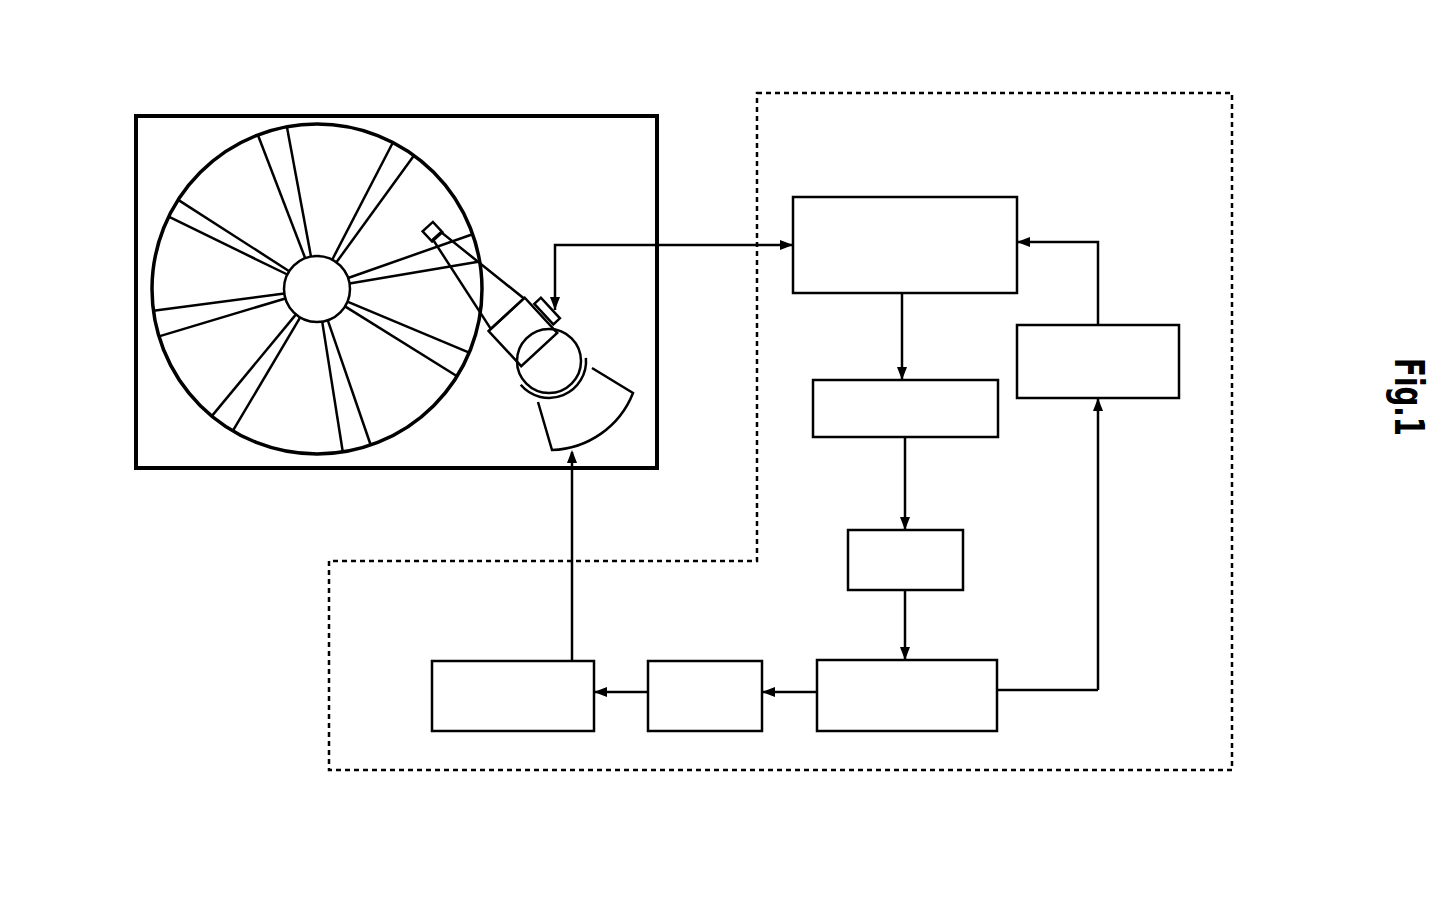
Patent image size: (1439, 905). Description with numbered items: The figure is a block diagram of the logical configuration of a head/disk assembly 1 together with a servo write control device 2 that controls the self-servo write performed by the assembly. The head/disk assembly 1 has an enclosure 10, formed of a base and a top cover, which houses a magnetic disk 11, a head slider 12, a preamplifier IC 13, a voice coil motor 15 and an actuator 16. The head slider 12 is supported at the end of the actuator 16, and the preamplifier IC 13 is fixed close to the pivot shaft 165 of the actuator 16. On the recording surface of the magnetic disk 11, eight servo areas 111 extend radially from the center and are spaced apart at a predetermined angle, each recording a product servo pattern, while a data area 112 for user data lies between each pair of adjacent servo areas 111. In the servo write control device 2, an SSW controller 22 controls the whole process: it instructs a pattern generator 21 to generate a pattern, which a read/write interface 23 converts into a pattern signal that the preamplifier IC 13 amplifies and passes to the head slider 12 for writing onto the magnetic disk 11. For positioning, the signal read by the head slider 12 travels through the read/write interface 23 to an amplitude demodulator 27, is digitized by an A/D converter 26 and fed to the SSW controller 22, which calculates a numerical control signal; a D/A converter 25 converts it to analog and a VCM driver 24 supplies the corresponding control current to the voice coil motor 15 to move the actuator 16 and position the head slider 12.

The head/disk assembly 1 is at (386, 282).
The servo write control device 2 is at (1234, 494).
The enclosure 10 is at (136, 295).
The magnetic disk 11 is at (268, 293).
The servo areas 111 is at (175, 219).
The data area 112 is at (303, 428).
The head slider 12 is at (441, 221).
The preamplifier IC 13 is at (560, 317).
The voice coil motor 15 is at (607, 380).
The actuator 16 is at (482, 376).
The pivot shaft 165 is at (521, 387).
The pattern generator 21 is at (1155, 325).
The SSW controller 22 is at (965, 660).
The read/write interface 23 is at (985, 197).
The VCM driver 24 is at (460, 661).
The D/A converter 25 is at (680, 661).
The A/D converter 26 is at (965, 557).
The amplitude demodulator 27 is at (935, 380).